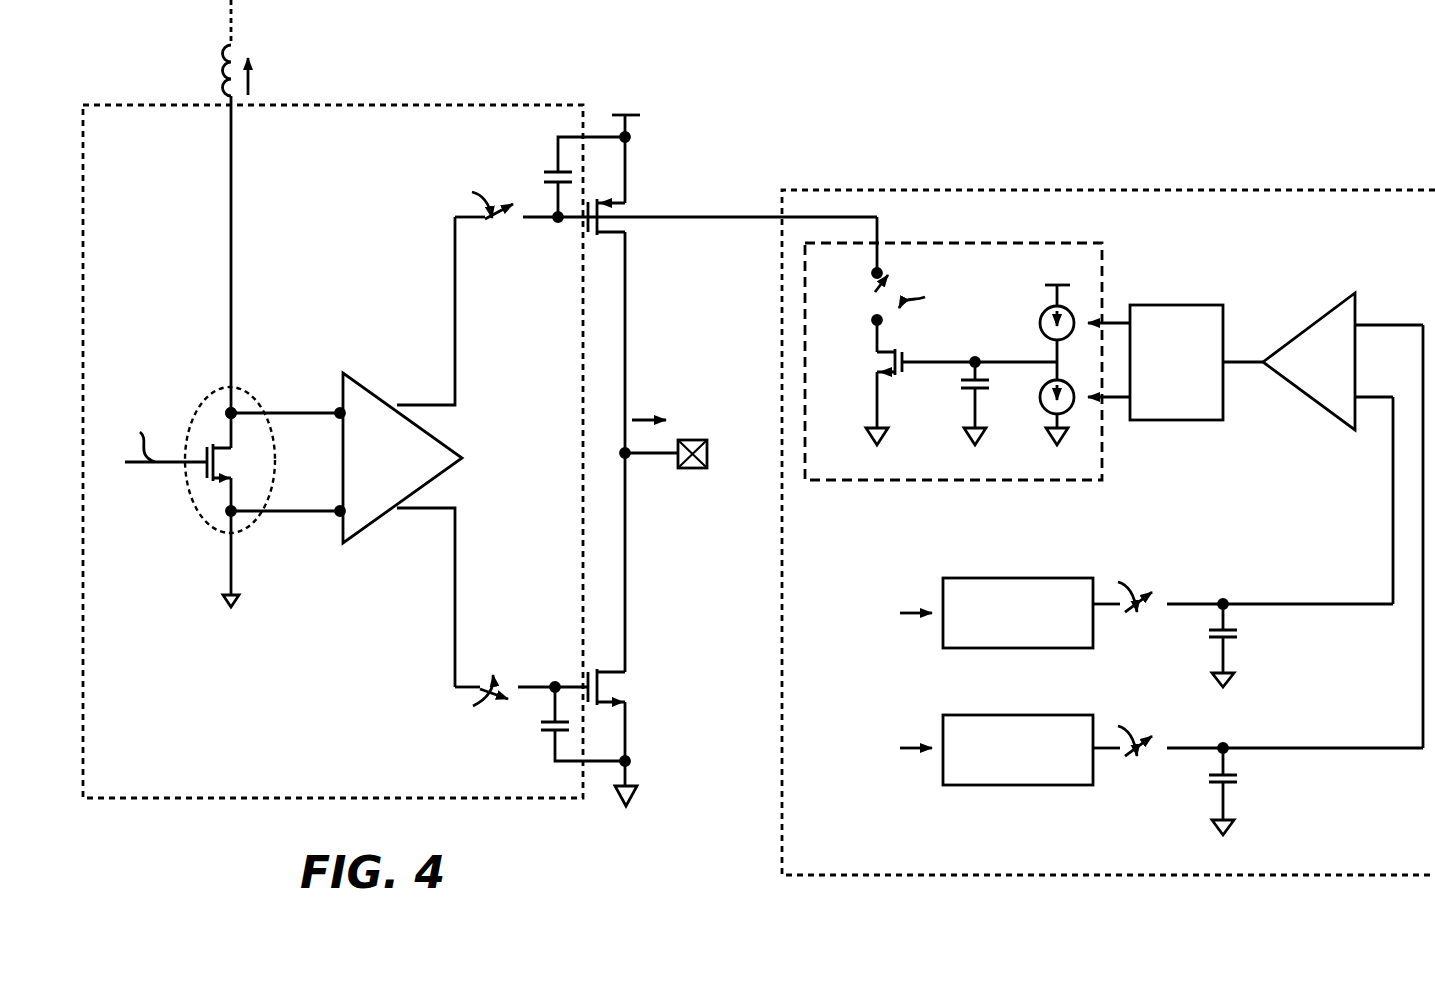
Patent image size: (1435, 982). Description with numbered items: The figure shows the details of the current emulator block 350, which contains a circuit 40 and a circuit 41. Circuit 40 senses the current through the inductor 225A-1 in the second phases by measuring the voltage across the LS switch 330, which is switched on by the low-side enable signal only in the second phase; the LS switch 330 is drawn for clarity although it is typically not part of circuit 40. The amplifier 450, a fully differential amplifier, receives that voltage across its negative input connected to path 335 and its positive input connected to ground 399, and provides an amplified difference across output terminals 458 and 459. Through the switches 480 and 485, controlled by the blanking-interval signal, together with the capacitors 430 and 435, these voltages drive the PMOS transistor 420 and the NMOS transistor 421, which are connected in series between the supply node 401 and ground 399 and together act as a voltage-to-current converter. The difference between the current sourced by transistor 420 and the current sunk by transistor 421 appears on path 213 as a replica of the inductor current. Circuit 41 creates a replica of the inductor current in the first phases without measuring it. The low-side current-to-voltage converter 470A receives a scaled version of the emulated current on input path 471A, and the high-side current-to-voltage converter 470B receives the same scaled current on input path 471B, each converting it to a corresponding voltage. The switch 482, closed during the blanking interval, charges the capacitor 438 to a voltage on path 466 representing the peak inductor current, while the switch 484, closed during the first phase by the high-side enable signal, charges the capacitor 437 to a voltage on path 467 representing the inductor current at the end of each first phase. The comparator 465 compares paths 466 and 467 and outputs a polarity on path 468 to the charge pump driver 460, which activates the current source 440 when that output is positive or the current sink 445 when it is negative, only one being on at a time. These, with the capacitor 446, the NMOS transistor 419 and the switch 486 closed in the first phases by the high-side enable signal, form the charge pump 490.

The circuit 40 is at (112, 789).
The circuit 41 is at (810, 866).
The current emulator block 350 is at (795, 103).
The inductor 225A-1 is at (218, 64).
The supply node 401 is at (625, 113).
The capacitor 430 is at (553, 172).
The transistor 420 is at (622, 203).
The switch 480 is at (515, 222).
The output terminal 458 is at (453, 342).
The output terminal 459 is at (453, 528).
The amplifier 450 is at (391, 469).
The LS switch 330 is at (215, 483).
The path 335 is at (222, 395).
The ground 399 is at (231, 604).
The path CSA-1 213 is at (700, 440).
The transistor 421 is at (622, 675).
The capacitor 435 is at (550, 733).
The switch 485 is at (512, 703).
The charge pump 490 is at (937, 472).
The switch 486 is at (880, 271).
The NMOS transistor 419 is at (905, 358).
The capacitor 446 is at (962, 386).
The current source 440 is at (1043, 316).
The current sink 445 is at (1046, 404).
The UP/DN CP driver 460 is at (1160, 402).
The comparator 465 is at (1338, 373).
The path 468 is at (1244, 356).
The LS-I2V converter 470A is at (996, 641).
The input path 471A is at (920, 612).
The switch 482 is at (1152, 592).
The capacitor 438 is at (1208, 634).
The path V-ILS-PK 466 is at (1302, 603).
The HS-I2V converter 470B is at (996, 778).
The input path 471B is at (920, 747).
The switch 484 is at (1165, 738).
The capacitor 437 is at (1208, 780).
The path V-IHS-PK 467 is at (1305, 747).